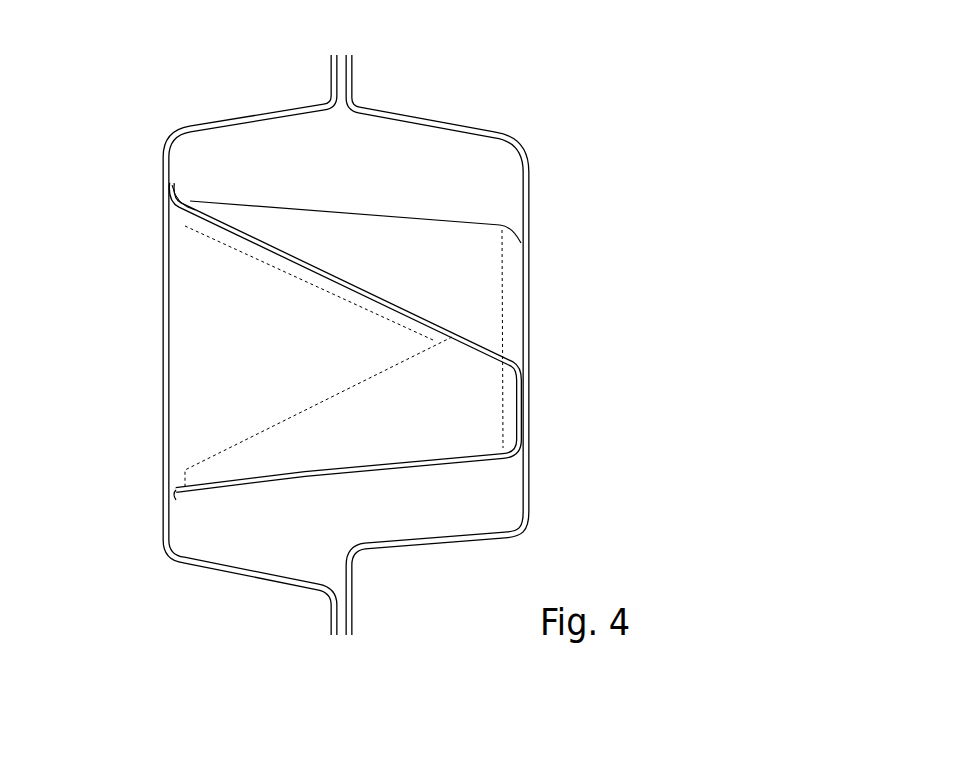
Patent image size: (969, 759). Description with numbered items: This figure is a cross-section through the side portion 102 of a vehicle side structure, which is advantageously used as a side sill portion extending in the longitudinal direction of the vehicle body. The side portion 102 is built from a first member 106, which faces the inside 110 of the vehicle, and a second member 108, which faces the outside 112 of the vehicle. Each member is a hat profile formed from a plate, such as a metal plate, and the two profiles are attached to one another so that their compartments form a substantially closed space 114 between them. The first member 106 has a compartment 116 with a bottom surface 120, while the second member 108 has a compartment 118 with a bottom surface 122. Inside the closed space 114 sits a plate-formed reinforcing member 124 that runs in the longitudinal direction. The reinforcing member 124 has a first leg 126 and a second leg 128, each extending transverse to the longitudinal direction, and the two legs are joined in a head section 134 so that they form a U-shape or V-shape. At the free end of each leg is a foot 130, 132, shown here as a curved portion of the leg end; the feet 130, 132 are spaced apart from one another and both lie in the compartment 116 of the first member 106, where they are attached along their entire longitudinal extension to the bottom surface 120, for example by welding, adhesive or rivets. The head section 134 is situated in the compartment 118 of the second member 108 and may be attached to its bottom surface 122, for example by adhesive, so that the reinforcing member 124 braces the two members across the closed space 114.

The side portion 102 is at (588, 454).
The first member 106 is at (163, 237).
The second member 108 is at (524, 216).
The inside 110 is at (52, 344).
The outside 112 is at (706, 369).
The closed space 114 is at (365, 192).
The compartment 116 is at (200, 332).
The compartment 118 is at (480, 193).
The bottom surface 120 is at (168, 372).
The bottom surface 122 is at (523, 480).
The reinforcing member 124 is at (306, 473).
The first leg 126 is at (348, 470).
The second leg 128 is at (408, 308).
The foot 130 is at (182, 493).
The foot 132 is at (193, 203).
The head section 134 is at (524, 402).